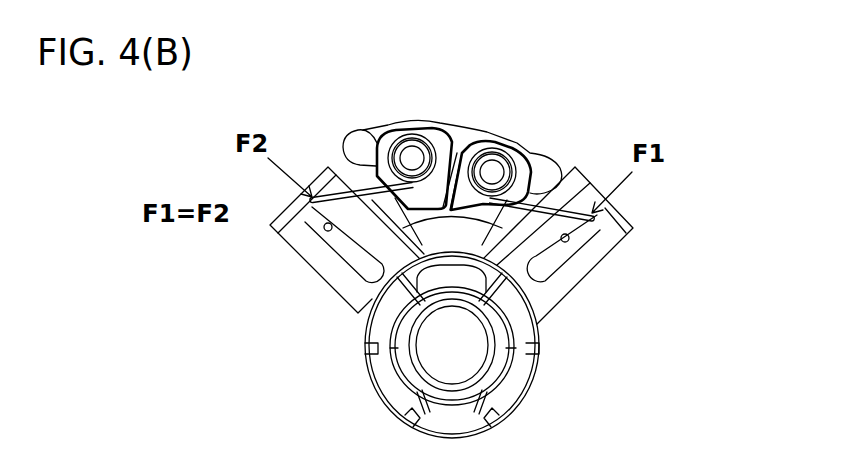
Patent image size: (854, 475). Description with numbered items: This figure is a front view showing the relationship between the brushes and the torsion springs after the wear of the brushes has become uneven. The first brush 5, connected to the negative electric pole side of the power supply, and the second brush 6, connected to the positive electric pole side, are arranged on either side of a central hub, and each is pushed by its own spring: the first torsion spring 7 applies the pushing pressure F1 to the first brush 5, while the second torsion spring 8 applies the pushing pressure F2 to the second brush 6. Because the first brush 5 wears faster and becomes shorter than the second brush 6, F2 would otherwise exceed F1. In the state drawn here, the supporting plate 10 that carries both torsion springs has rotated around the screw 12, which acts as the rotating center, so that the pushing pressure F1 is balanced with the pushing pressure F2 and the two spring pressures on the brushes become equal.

The first brush 5 is at (548, 252).
The second brush 6 is at (358, 256).
The first torsion spring 7 is at (512, 132).
The second torsion spring 8 is at (393, 125).
The supporting plate 10 is at (440, 128).
The screw 12 is at (455, 153).